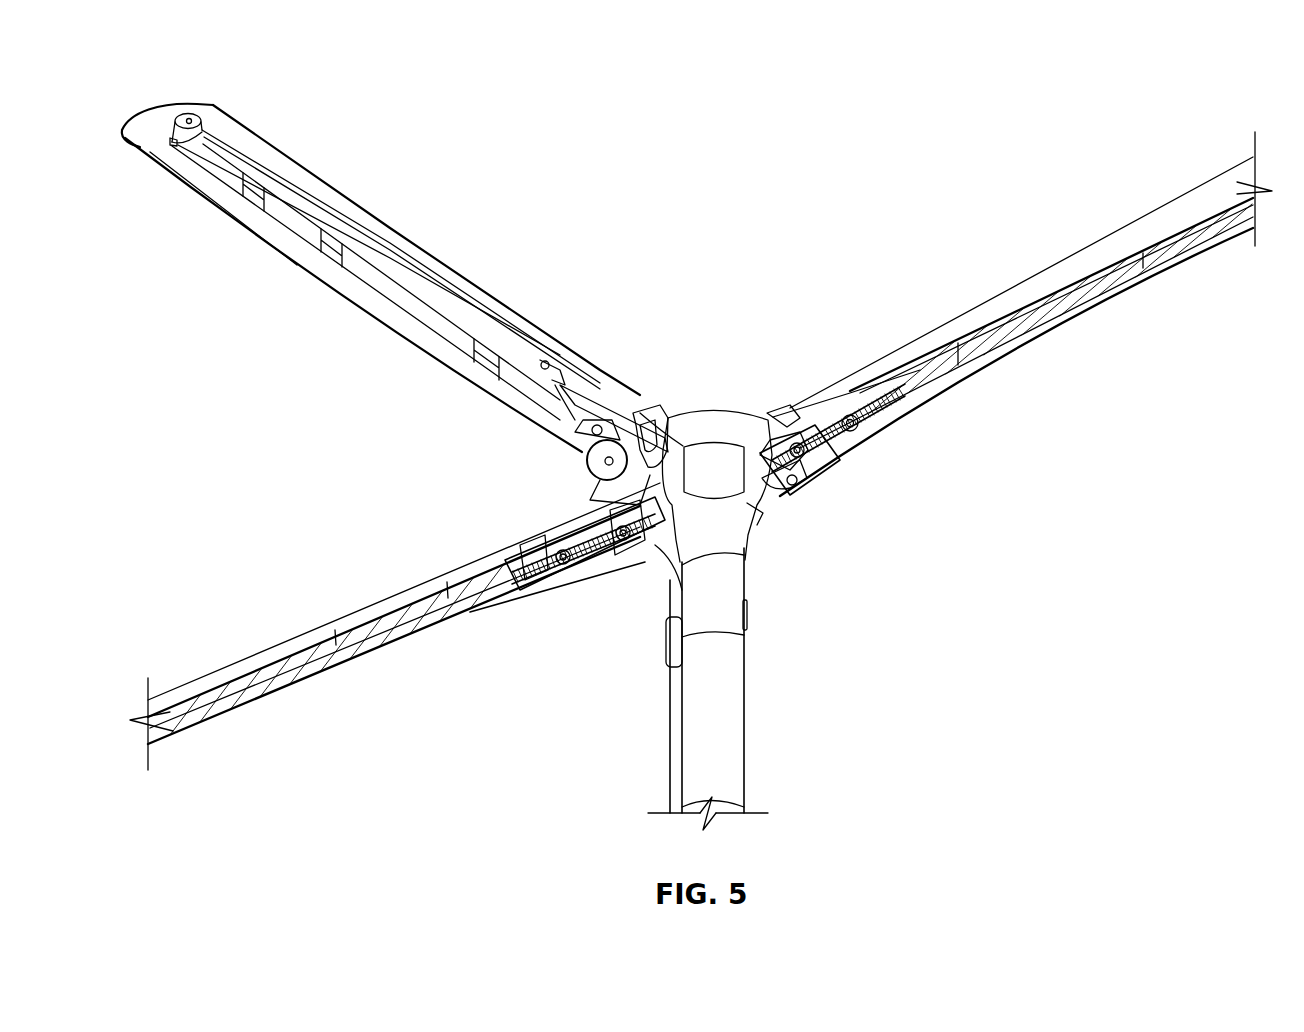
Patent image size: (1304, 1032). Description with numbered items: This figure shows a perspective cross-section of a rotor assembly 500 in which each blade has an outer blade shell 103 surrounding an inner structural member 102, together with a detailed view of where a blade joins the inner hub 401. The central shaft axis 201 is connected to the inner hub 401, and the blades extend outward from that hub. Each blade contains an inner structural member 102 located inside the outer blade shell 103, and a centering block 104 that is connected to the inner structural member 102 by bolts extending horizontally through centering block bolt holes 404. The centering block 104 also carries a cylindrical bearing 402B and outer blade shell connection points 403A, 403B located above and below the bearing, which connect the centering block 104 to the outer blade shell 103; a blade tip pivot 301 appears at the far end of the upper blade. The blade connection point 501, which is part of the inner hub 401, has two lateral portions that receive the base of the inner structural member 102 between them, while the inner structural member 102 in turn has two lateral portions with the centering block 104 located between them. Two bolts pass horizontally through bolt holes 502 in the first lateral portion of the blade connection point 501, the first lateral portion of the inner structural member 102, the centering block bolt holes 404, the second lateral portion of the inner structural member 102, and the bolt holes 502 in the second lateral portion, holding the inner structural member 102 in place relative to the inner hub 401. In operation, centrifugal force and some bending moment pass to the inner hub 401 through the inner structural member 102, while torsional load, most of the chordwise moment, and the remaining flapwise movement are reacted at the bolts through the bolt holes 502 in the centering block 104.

The wind turbine rotor assembly 500 is at (1058, 120).
The inner structural member 102 is at (367, 230).
The outer blade shell 103 is at (433, 260).
The centering block 104 is at (597, 408).
The central shaft axis 201 is at (720, 707).
The blade tip pivot 301 is at (183, 115).
The inner hub 401 is at (727, 470).
The cylindrical bearing 402B is at (500, 560).
The outer blade shell connection point 403A is at (650, 435).
The outer blade shell connection point 403B is at (543, 363).
The centering block bolt hole 404 is at (577, 527).
The blade connection point 501 is at (580, 433).
The bolt hole 502 is at (587, 428).